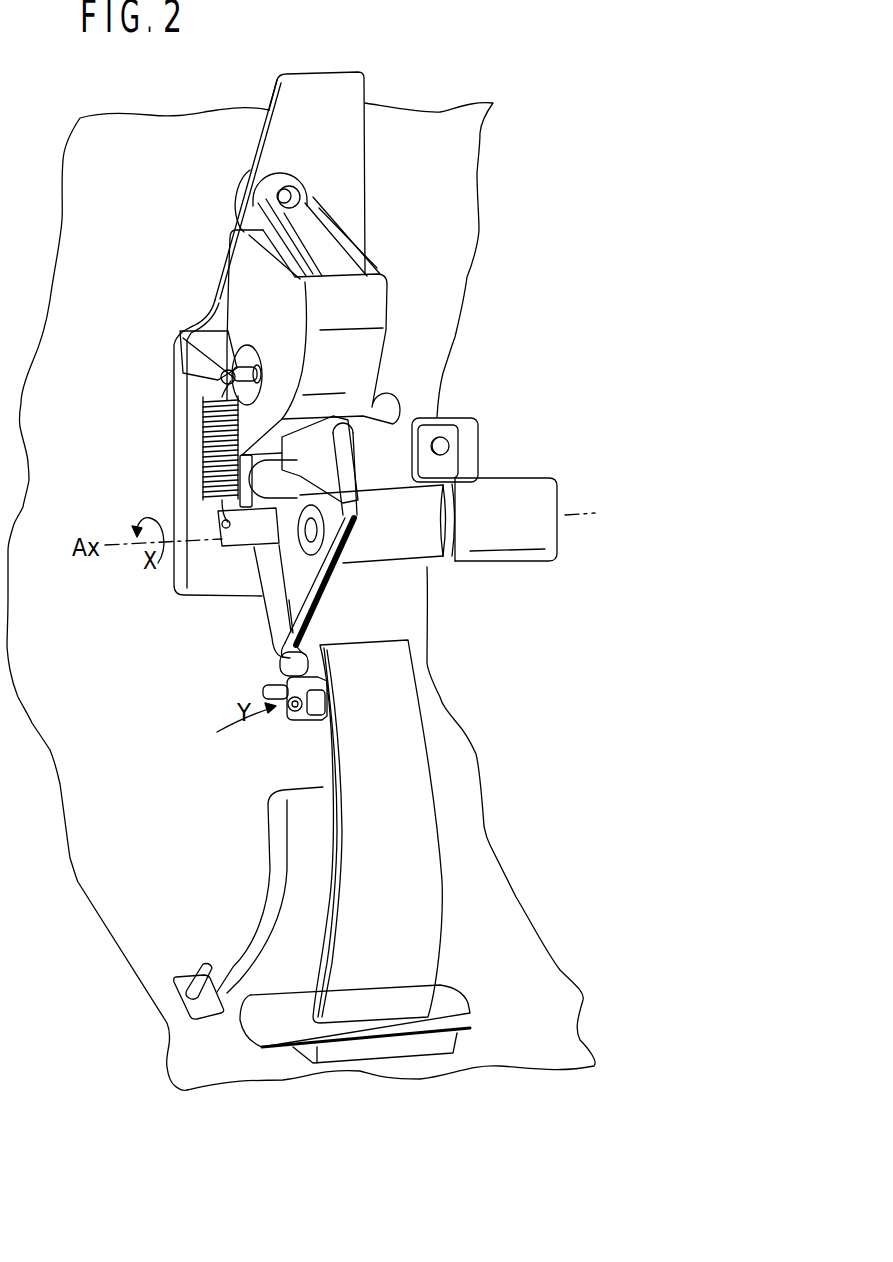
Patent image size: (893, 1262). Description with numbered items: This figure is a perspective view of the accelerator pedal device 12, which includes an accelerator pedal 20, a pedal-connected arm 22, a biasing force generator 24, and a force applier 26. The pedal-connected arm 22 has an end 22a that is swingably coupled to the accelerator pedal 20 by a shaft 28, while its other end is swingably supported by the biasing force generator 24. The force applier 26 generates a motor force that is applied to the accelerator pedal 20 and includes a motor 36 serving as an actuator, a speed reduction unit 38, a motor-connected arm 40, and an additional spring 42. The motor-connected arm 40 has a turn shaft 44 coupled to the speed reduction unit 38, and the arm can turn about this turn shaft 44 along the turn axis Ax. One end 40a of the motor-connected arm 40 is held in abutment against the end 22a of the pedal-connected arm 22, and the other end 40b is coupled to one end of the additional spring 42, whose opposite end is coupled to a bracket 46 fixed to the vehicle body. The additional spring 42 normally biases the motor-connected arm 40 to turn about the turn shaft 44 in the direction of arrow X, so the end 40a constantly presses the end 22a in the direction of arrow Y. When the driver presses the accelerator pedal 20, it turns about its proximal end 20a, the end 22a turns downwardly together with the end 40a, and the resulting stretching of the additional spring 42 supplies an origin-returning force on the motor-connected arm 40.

The accelerator pedal device 12 is at (566, 156).
The accelerator pedal 20 is at (407, 842).
The proximal end 20a is at (350, 1013).
The pedal-connected arm 22 is at (357, 523).
The end 22a is at (278, 667).
The biasing force generator 24 is at (380, 308).
The force applier 26 is at (472, 570).
The shaft 28 is at (293, 721).
The motor 36 is at (525, 487).
The speed reduction unit 38 is at (380, 547).
The motor-connected arm 40 is at (273, 605).
The end 40a is at (263, 689).
The end 40b is at (213, 528).
The additional spring 42 is at (200, 435).
The turn shaft 44 is at (285, 570).
The bracket 46 is at (197, 361).